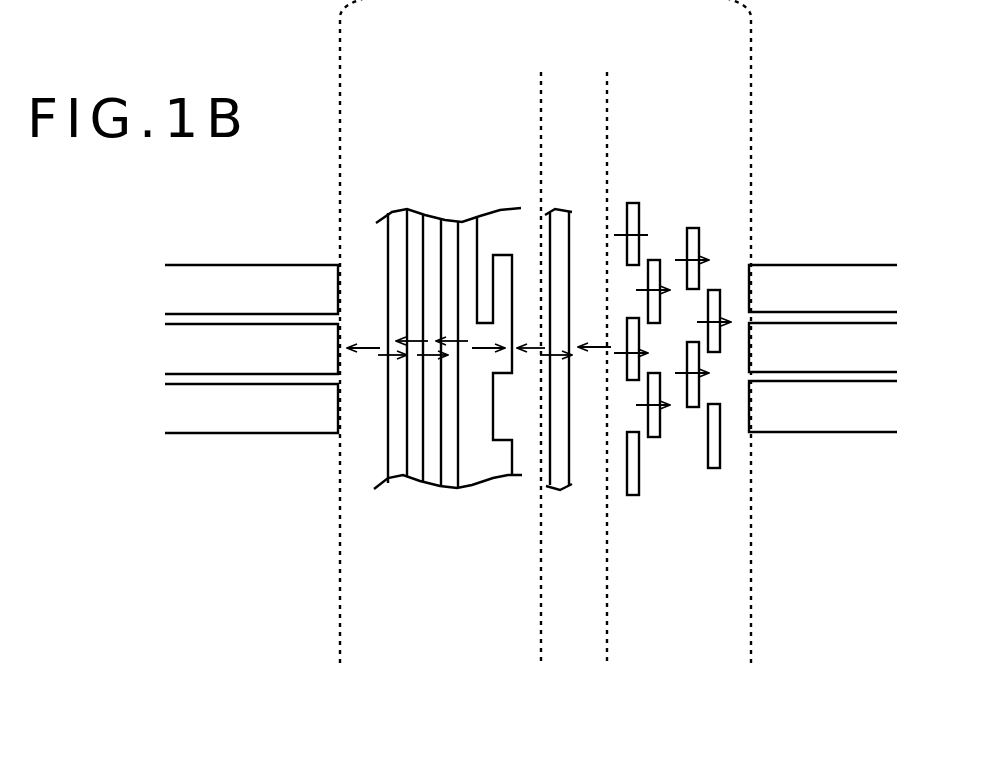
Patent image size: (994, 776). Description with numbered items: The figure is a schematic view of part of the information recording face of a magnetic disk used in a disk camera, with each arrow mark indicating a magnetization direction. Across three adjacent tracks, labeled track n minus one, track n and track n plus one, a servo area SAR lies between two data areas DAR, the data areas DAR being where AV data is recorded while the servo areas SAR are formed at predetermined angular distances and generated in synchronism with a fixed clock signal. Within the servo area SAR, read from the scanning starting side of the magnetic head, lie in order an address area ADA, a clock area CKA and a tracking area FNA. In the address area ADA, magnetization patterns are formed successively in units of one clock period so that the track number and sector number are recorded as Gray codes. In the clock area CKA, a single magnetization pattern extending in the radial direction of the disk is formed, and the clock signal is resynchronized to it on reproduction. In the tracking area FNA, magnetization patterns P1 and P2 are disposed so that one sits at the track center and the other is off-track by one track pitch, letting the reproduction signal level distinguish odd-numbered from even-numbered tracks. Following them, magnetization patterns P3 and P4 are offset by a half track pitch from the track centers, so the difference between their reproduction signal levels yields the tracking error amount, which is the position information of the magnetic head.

The data area DAR is at (340, 49).
The servo area SAR is at (751, 49).
The address area ADA is at (541, 629).
The clock area CKA is at (607, 629).
The tracking area FNA is at (751, 629).
The magnetization pattern P1 is at (633, 203).
The magnetization pattern P2 is at (652, 260).
The magnetization pattern P3 is at (692, 228).
The magnetization pattern P4 is at (714, 290).